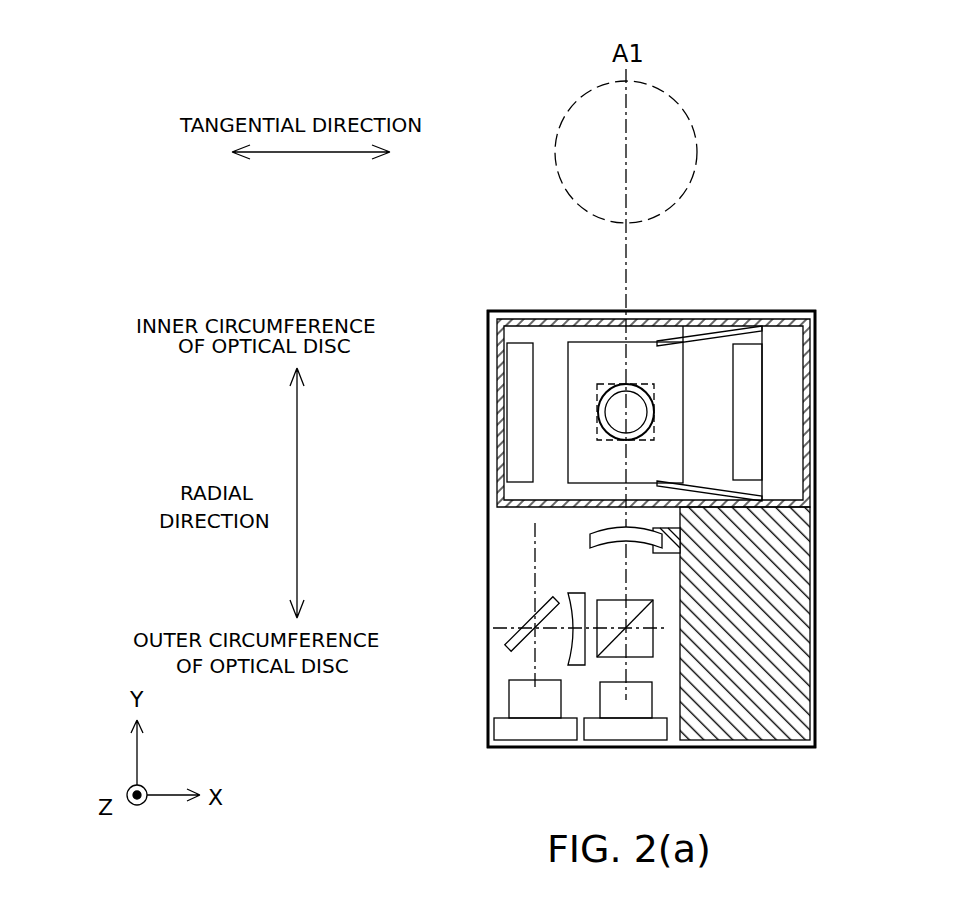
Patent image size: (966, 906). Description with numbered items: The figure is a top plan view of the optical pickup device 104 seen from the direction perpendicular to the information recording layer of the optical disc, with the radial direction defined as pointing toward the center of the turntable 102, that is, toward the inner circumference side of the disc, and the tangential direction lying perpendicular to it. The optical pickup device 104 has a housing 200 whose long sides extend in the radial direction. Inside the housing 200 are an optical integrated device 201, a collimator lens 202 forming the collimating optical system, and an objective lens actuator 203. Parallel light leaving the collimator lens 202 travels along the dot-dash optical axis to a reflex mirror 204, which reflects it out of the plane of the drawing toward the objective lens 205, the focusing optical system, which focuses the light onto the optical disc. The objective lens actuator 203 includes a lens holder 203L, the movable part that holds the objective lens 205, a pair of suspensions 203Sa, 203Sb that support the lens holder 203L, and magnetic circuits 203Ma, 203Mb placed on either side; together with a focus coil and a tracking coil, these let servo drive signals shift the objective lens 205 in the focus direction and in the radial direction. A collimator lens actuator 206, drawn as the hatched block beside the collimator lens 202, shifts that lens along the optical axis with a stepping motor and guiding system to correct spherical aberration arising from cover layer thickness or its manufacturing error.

The turntable 102 is at (688, 118).
The optical pickup device 104 is at (488, 302).
The housing 200 is at (805, 313).
The optical integrated device 201 is at (605, 747).
The collimator lens 202 is at (590, 541).
The objective lens actuator 203 is at (508, 509).
The lens holder 203L is at (604, 387).
The magnetic circuit 203Ma is at (752, 397).
The magnetic circuit 203Mb is at (517, 390).
The suspension 203Sa is at (688, 336).
The suspension 203Sb is at (700, 487).
The reflex mirror 204 is at (603, 383).
The objective lens 205 is at (644, 385).
The collimator lens actuator 206 is at (770, 708).